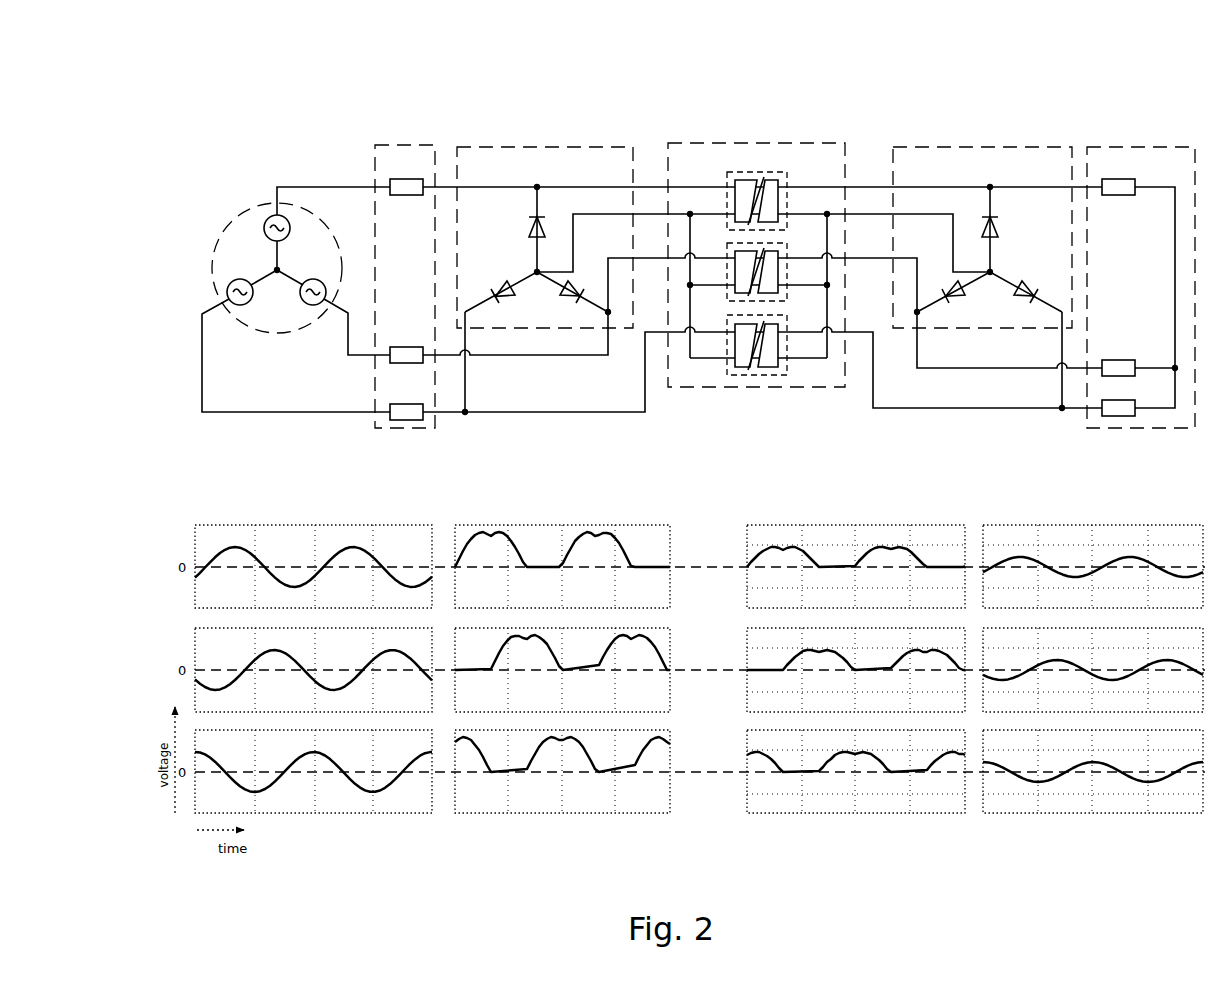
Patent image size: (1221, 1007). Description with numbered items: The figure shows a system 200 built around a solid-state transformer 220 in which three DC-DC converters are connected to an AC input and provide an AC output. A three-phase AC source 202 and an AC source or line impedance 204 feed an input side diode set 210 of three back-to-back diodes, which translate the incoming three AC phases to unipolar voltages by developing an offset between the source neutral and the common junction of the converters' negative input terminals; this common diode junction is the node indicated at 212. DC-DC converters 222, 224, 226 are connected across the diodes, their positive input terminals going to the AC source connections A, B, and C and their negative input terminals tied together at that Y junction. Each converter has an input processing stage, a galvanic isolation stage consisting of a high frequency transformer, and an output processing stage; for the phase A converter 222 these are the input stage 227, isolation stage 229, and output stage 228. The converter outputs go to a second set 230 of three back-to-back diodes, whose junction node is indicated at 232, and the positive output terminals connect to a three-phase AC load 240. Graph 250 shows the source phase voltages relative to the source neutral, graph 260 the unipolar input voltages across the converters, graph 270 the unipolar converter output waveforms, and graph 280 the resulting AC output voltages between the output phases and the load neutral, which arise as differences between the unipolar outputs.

The system 200 is at (277, 83).
The three-phase AC source 202 is at (218, 237).
The AC source or line impedance 204 is at (373, 160).
The input side diode set 210 is at (523, 145).
The DC node Y_DC of input rectifier 212 is at (538, 280).
The solid-state transformer 220 is at (693, 143).
The DC-DC converter 222 is at (732, 167).
The DC-DC converter 224 is at (780, 303).
The DC-DC converter 226 is at (757, 380).
The input stage 227 is at (728, 198).
The output stage 228 is at (781, 197).
The isolation stage 229 is at (762, 175).
The set of three diodes 230 is at (993, 145).
The DC node V_DC of output diode network 232 is at (990, 280).
The three-phase AC load 240 is at (1125, 145).
The graph 250 is at (238, 523).
The graph 260 is at (520, 523).
The graph 270 is at (795, 523).
The graph 280 is at (1075, 525).